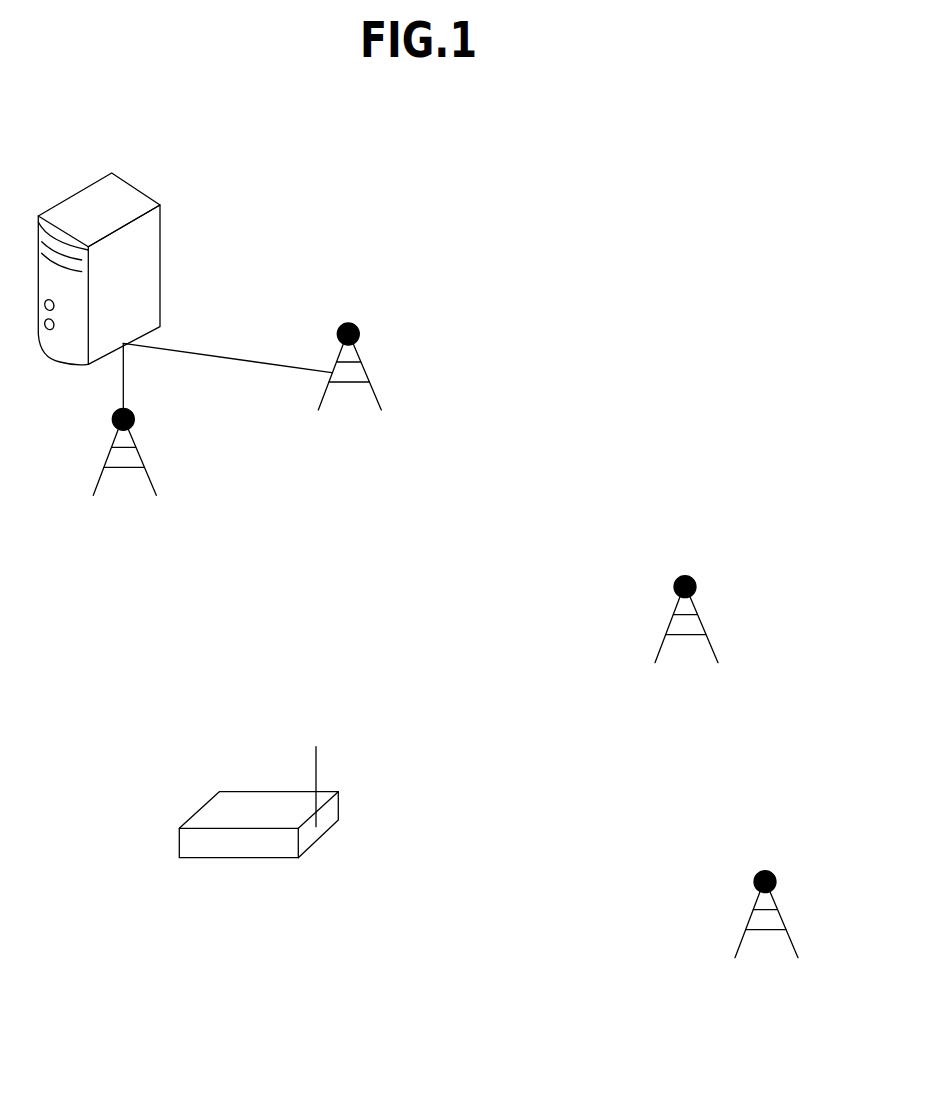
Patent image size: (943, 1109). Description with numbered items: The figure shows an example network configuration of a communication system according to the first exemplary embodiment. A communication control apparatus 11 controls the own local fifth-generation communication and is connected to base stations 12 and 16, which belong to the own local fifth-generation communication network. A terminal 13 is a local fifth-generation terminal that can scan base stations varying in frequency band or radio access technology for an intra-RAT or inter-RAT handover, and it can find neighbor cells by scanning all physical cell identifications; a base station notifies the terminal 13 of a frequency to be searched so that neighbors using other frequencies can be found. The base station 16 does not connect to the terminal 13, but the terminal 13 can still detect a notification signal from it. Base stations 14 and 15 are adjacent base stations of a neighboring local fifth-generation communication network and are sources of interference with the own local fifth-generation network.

The communication control apparatus 11 is at (160, 267).
The base station 12 is at (143, 457).
The terminal 13 is at (245, 858).
The base station 14 is at (782, 918).
The base station 15 is at (705, 622).
The base station 16 is at (367, 368).